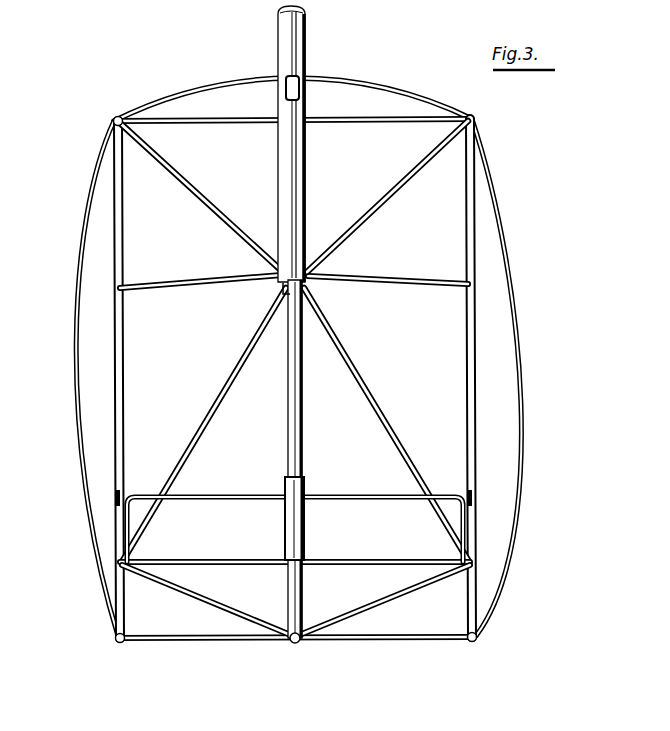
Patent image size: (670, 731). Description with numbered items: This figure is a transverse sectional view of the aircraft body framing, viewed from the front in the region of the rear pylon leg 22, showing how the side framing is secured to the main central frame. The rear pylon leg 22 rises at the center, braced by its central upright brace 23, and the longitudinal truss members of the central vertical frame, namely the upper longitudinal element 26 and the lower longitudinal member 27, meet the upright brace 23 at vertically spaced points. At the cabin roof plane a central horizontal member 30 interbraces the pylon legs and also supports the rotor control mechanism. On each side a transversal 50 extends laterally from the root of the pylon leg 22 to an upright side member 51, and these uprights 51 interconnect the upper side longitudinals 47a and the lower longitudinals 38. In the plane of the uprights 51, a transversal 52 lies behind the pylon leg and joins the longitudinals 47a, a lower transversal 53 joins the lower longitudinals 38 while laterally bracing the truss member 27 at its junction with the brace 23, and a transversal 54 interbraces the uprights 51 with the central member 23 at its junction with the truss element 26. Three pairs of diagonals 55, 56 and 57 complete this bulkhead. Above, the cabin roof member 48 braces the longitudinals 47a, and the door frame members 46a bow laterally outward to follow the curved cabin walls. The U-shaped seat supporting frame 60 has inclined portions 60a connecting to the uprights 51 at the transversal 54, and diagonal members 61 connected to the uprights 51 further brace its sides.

The rear pylon leg 22 is at (306, 48).
The central upright brace 23 is at (303, 402).
The upper longitudinal element of the central truss 26 is at (288, 480).
The lower longitudinal member of the central vertical truss 27 is at (295, 645).
The central horizontal member 30 is at (300, 96).
The lower longitudinals 38 is at (116, 642).
The door frame members 46a is at (73, 333).
The side longitudinals 47a is at (113, 122).
The cabin roof member 48 is at (222, 89).
The transversal 50 is at (211, 284).
The upright side member 51 is at (124, 236).
The transversal 52 is at (240, 126).
The lower transversal 53 is at (212, 645).
The transversal 54 is at (200, 560).
The diagonals 55 is at (213, 200).
The diagonals 56 is at (218, 408).
The diagonals 57 is at (212, 601).
The U-shaped seat supporting frame 60 is at (298, 513).
The inclined portion of seat supporting frame 60a is at (136, 510).
The diagonal members 61 is at (117, 498).